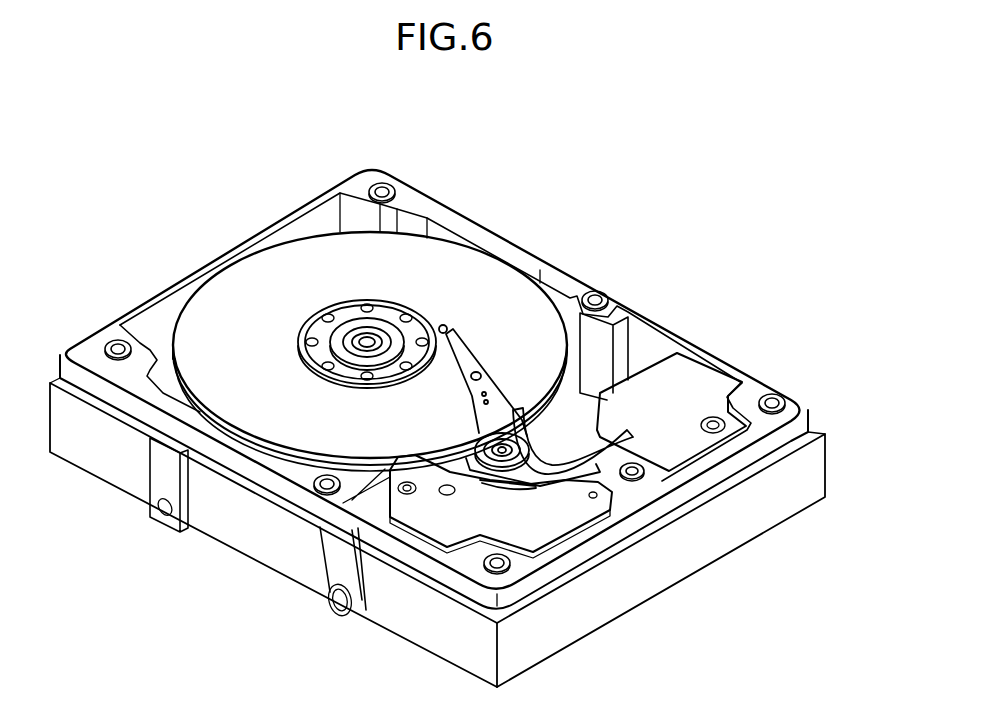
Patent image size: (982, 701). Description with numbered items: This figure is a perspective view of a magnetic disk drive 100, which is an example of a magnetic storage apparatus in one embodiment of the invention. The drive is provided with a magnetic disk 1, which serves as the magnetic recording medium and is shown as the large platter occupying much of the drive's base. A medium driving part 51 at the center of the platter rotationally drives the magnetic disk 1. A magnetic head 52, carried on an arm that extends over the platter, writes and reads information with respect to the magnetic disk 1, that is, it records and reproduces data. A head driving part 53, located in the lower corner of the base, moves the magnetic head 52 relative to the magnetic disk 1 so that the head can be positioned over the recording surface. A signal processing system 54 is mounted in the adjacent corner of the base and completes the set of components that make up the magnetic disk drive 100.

The magnetic disk drive 100 is at (706, 157).
The magnetic disk 1 is at (427, 280).
The medium driving part 51 is at (313, 320).
The magnetic head 52 is at (445, 325).
The head driving part 53 is at (533, 497).
The signal processing system 54 is at (690, 398).